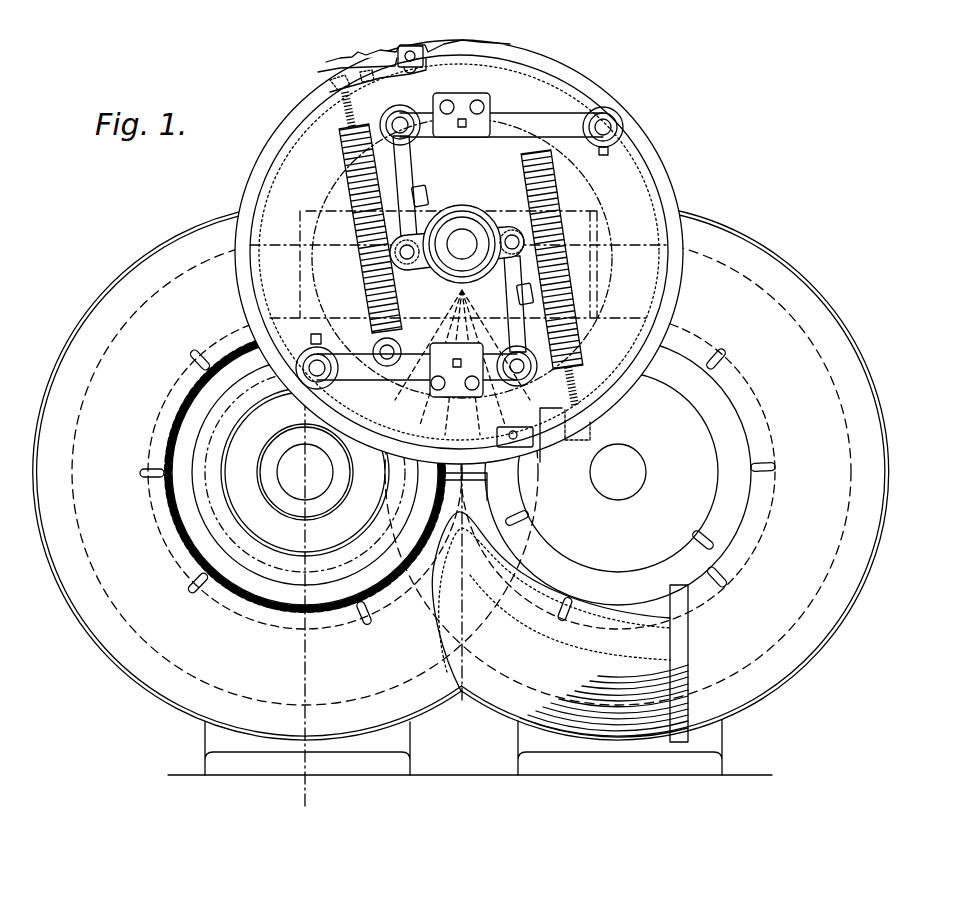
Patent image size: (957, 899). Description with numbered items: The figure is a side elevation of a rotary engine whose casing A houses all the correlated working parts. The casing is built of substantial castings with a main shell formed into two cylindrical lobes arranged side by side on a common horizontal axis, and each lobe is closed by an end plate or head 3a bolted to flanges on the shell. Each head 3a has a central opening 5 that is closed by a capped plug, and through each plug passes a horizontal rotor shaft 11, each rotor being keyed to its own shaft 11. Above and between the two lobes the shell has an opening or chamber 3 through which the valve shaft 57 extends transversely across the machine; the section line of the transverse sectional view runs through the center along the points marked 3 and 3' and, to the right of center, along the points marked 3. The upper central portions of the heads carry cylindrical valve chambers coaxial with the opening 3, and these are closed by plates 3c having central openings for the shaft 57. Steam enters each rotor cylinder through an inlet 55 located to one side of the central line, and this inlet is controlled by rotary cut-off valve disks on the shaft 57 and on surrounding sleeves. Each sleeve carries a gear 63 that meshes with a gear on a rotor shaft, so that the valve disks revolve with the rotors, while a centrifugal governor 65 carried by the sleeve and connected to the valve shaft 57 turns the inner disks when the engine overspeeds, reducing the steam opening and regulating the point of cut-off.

The opening or chamber 3 is at (375, 427).
The section line point 3' is at (459, 258).
The end plates or heads 3a is at (170, 655).
The heads or plates 3c is at (648, 200).
The central opening 5 is at (272, 612).
The shaft 11 is at (457, 472).
The inlet 55 is at (451, 311).
The shaft 57 is at (467, 237).
The gear 63 is at (318, 272).
The centrifugal governor 65 is at (560, 208).
The casing A is at (529, 679).